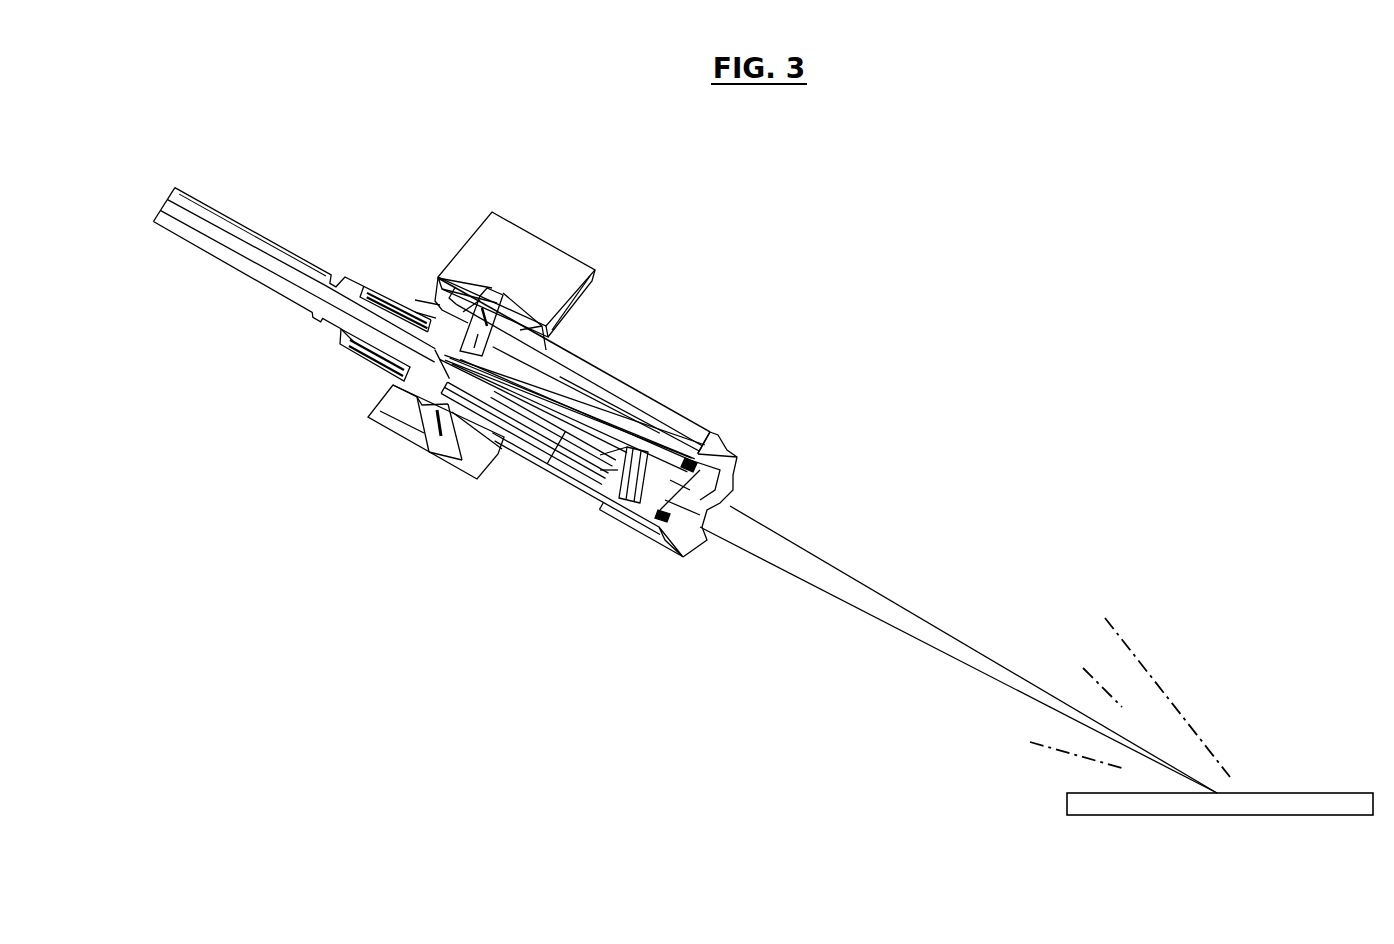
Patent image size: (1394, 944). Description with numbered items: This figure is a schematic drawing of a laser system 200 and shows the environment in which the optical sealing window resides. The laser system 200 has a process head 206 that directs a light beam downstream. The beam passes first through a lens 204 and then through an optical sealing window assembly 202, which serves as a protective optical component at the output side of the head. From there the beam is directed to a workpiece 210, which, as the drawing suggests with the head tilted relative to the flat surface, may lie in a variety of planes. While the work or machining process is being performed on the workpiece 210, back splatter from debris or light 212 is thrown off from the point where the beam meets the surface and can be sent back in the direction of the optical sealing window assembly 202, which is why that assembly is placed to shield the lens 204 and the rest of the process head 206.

The laser system 200 is at (410, 598).
The optical sealing window (OSW) assembly 202 is at (710, 513).
The lens 204 is at (623, 487).
The process head 206 is at (580, 367).
The workpiece 210 is at (1220, 827).
The back splatter from debris or light 212 is at (1130, 697).